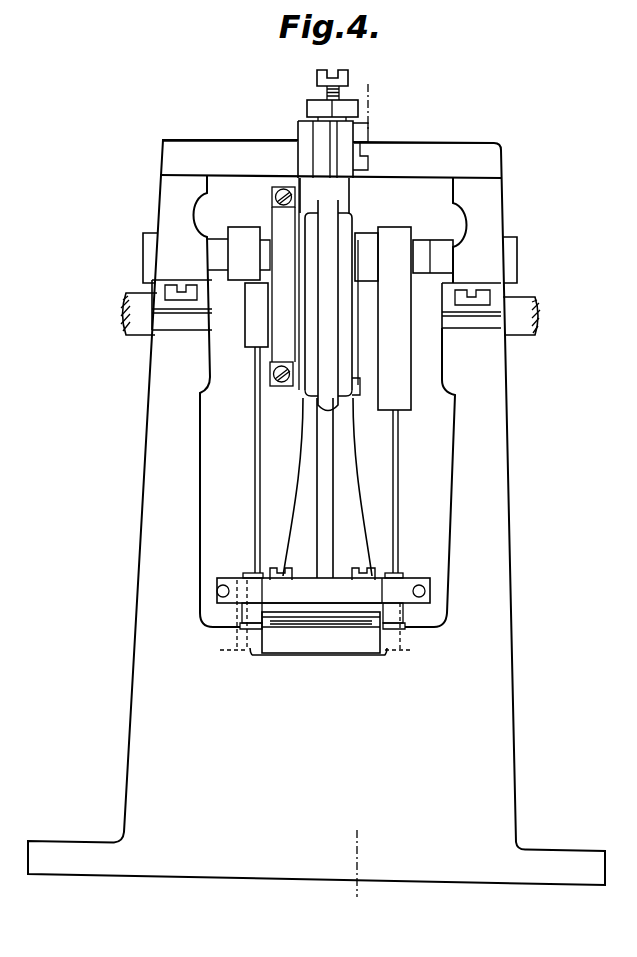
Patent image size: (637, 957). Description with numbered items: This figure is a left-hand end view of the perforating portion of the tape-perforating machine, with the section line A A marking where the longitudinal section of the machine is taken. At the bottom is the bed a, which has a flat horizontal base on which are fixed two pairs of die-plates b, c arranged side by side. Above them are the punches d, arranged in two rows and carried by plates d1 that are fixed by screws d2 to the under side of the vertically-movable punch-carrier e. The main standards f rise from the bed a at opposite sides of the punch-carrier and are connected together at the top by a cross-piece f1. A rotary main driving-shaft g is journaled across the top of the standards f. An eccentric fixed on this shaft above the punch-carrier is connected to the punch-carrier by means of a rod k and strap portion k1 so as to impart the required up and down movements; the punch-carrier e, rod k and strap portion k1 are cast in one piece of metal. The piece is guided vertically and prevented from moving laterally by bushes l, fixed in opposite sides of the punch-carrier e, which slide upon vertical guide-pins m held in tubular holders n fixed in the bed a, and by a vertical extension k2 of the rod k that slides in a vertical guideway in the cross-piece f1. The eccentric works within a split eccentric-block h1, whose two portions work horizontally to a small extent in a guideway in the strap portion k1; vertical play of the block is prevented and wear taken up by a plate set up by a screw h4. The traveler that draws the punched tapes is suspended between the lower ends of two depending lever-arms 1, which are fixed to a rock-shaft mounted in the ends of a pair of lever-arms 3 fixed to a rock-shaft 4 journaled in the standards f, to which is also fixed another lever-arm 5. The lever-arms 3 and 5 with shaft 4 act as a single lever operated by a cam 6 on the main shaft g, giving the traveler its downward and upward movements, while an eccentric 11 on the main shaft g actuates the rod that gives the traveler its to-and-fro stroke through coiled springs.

The main standards f is at (316, 512).
The cross-piece f1 is at (263, 147).
The section line A is at (358, 493).
The screw h4 is at (326, 92).
The vertical extension of the rod k2 is at (332, 195).
The strap portion k1 is at (328, 294).
The split eccentric-block h1 is at (363, 385).
The rod k is at (324, 470).
The eccentric 11 is at (268, 303).
The lever-arms 3 is at (434, 257).
The rock-shaft 4 is at (217, 254).
The lever-arm 5 is at (366, 257).
The cam 6 is at (394, 318).
The depending lever-arms 1 is at (256, 460).
The rotary main driving-shaft g is at (130, 315).
The bushes l is at (245, 576).
The screws d2 is at (372, 560).
The punch-carrier e is at (323, 614).
The end screws o is at (321, 592).
The punches d is at (289, 606).
The plates d1 is at (328, 632).
The vertical guide-pins m is at (242, 613).
The tubular holders n is at (245, 626).
The bed a is at (343, 640).
The die-plates c is at (313, 616).
The die-plates b is at (277, 623).